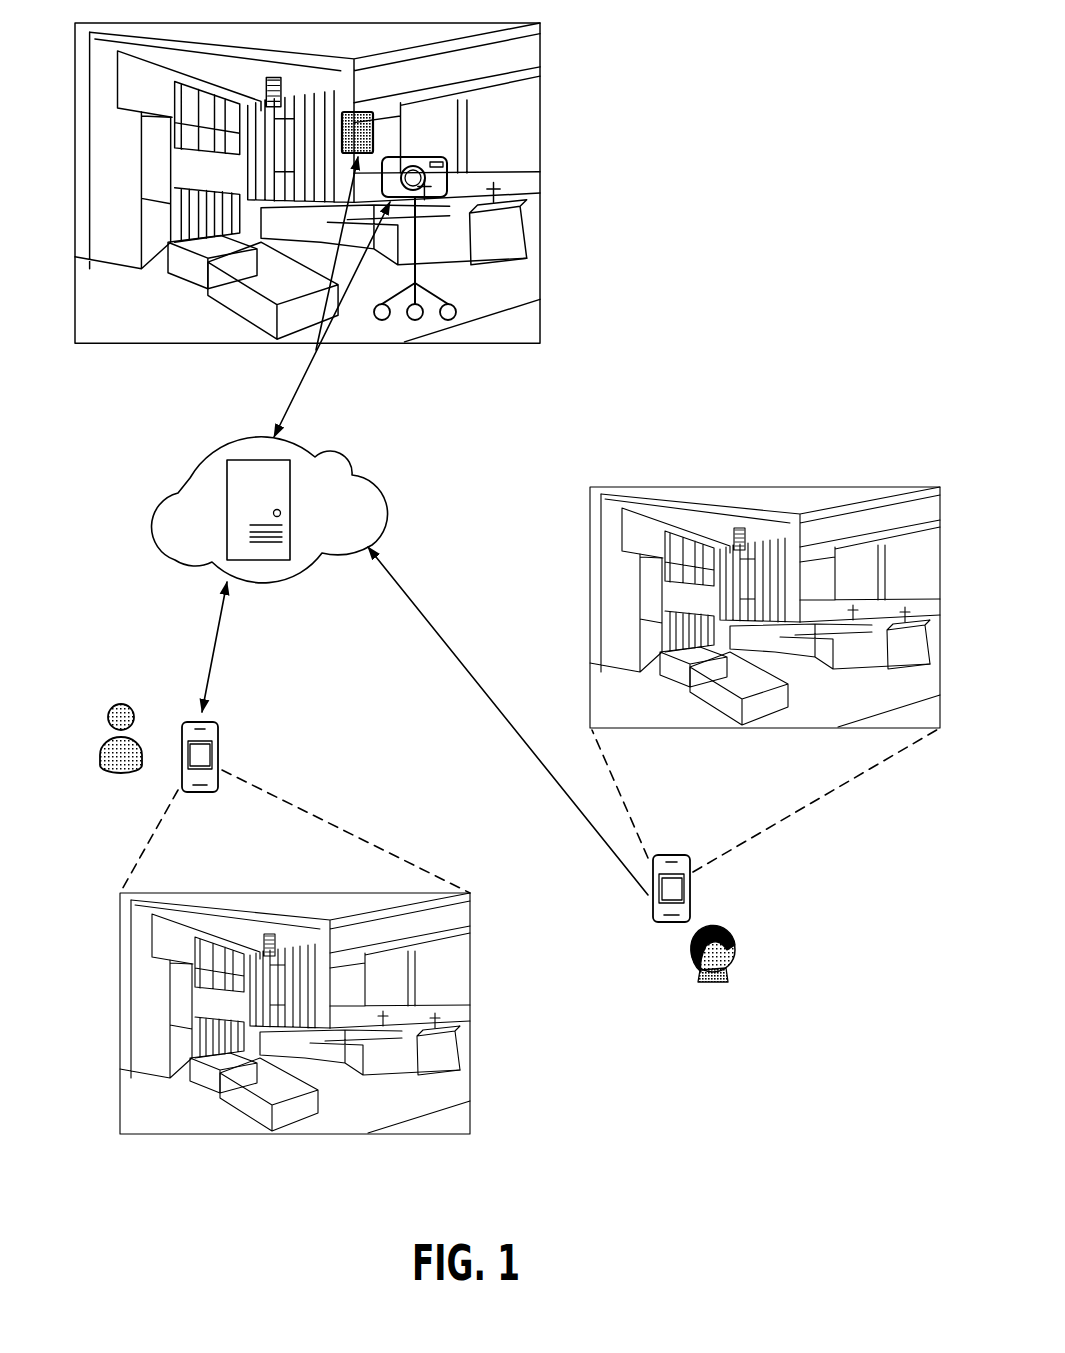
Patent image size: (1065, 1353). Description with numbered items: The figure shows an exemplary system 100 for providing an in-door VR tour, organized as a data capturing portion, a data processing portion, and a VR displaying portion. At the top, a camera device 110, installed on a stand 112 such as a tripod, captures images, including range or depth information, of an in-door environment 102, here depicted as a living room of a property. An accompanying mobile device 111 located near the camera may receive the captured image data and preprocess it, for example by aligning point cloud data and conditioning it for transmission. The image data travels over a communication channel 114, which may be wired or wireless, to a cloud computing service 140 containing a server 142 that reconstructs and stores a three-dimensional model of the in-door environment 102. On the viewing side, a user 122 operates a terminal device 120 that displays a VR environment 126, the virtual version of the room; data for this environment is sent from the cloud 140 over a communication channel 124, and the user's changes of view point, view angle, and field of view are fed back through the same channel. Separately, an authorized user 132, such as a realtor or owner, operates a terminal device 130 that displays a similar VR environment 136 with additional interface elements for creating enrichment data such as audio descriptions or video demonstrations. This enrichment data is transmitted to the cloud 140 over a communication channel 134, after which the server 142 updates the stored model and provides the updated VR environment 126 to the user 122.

The system 100 is at (872, 129).
The in-door environment 102 is at (540, 27).
The camera device 110 is at (447, 195).
The mobile device 111 is at (373, 138).
The stand 112 is at (415, 273).
The communication channel 114 is at (300, 382).
The terminal device 120 is at (218, 727).
The user 122 is at (100, 750).
The communication channel 124 is at (220, 628).
The VR environment 126 is at (202, 757).
The terminal device 130 is at (657, 922).
The user 132 is at (742, 965).
The communication channel 134 is at (422, 615).
The VR environment 136 is at (727, 486).
The cloud computing service 140 is at (387, 508).
The server 142 is at (290, 508).